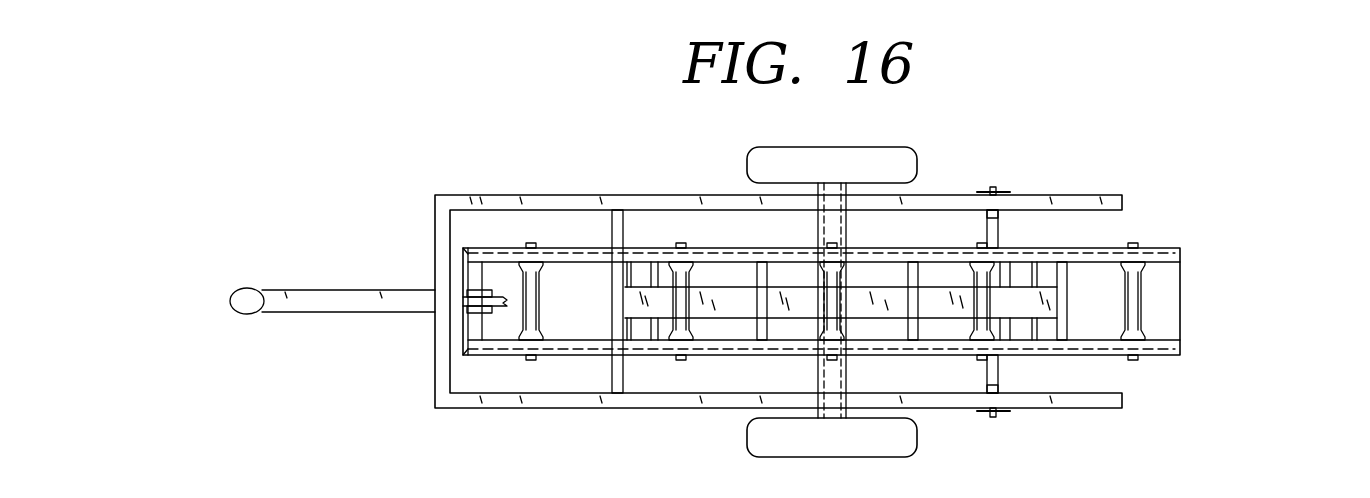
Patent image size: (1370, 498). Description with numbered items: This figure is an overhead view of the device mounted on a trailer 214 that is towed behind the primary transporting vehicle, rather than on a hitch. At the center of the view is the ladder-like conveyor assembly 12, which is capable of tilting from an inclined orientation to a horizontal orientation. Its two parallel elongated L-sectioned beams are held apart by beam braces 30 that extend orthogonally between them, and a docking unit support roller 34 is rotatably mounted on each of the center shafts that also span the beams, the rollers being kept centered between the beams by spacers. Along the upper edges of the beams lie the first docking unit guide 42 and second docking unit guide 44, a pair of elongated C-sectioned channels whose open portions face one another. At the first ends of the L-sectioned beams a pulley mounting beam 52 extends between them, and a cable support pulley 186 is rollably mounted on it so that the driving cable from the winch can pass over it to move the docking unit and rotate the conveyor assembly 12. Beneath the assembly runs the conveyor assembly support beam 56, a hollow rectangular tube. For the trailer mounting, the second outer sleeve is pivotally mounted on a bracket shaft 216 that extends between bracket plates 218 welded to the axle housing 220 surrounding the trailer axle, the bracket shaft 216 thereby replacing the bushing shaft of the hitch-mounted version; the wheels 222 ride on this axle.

The conveyor assembly 12 is at (1195, 250).
The trailer 214 is at (502, 178).
The bracket plates 218 is at (1070, 200).
The axle housing 220 is at (998, 230).
The bracket shaft 216 is at (835, 233).
The wheels 222 is at (825, 203).
The first docking unit guide 42 is at (493, 343).
The second docking unit guide 44 is at (483, 255).
The pulley mounting beam 52 is at (473, 328).
The cable support pulley 186 is at (478, 303).
The beam braces 30 is at (608, 290).
The docking unit support roller 34 is at (533, 320).
The conveyor assembly support beam 56 is at (743, 297).